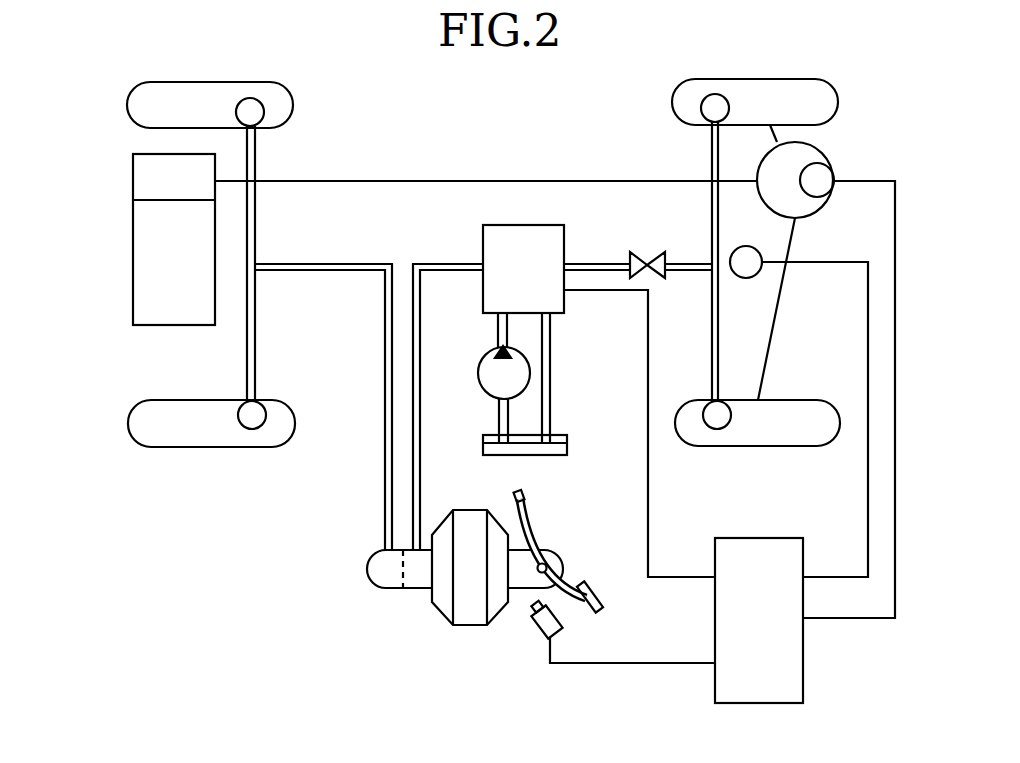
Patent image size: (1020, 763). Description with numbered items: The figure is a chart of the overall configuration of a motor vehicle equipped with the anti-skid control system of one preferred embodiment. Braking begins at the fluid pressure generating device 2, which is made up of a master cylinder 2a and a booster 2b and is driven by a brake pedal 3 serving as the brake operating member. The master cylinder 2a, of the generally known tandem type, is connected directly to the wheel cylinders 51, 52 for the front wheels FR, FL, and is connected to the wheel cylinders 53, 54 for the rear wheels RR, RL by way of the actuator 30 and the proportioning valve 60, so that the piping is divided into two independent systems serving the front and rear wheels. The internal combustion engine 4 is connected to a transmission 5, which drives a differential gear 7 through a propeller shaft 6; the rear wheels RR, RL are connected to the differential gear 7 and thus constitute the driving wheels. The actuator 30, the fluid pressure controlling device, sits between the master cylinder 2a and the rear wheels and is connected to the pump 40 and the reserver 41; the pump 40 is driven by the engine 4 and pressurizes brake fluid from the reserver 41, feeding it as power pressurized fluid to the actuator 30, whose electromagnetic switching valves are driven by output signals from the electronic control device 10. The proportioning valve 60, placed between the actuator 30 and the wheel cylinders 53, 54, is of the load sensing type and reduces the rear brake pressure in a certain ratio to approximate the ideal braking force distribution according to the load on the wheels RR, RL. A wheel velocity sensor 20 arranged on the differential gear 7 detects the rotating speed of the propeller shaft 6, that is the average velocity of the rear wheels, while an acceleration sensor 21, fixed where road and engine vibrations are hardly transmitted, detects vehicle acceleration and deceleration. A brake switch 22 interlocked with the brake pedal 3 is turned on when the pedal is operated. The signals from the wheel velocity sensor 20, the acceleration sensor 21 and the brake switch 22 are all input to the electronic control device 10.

The fluid pressure generating device 2 is at (451, 606).
The master cylinder 2a is at (382, 572).
The booster 2b is at (480, 615).
The brake pedal 3 is at (598, 593).
The internal combustion engine 4 is at (175, 312).
The transmission 5 is at (142, 182).
The propeller shaft 6 is at (392, 181).
The differential gear 7 is at (823, 147).
The electronic control device 10 is at (788, 647).
The wheel velocity sensor 20 is at (812, 197).
The acceleration sensor 21 is at (747, 278).
The brake switch 22 is at (540, 624).
The actuator 30 is at (493, 245).
The pump 40 is at (495, 373).
The reserver 41 is at (567, 447).
The wheel cylinder 51 is at (257, 114).
The wheel cylinder 52 is at (258, 410).
The wheel cylinder 53 is at (708, 118).
The wheel cylinder 54 is at (718, 417).
The proportioning valve 60 is at (648, 252).
The wheel FR is at (276, 103).
The wheel FL is at (250, 438).
The wheel RR is at (688, 96).
The wheel RL is at (772, 431).